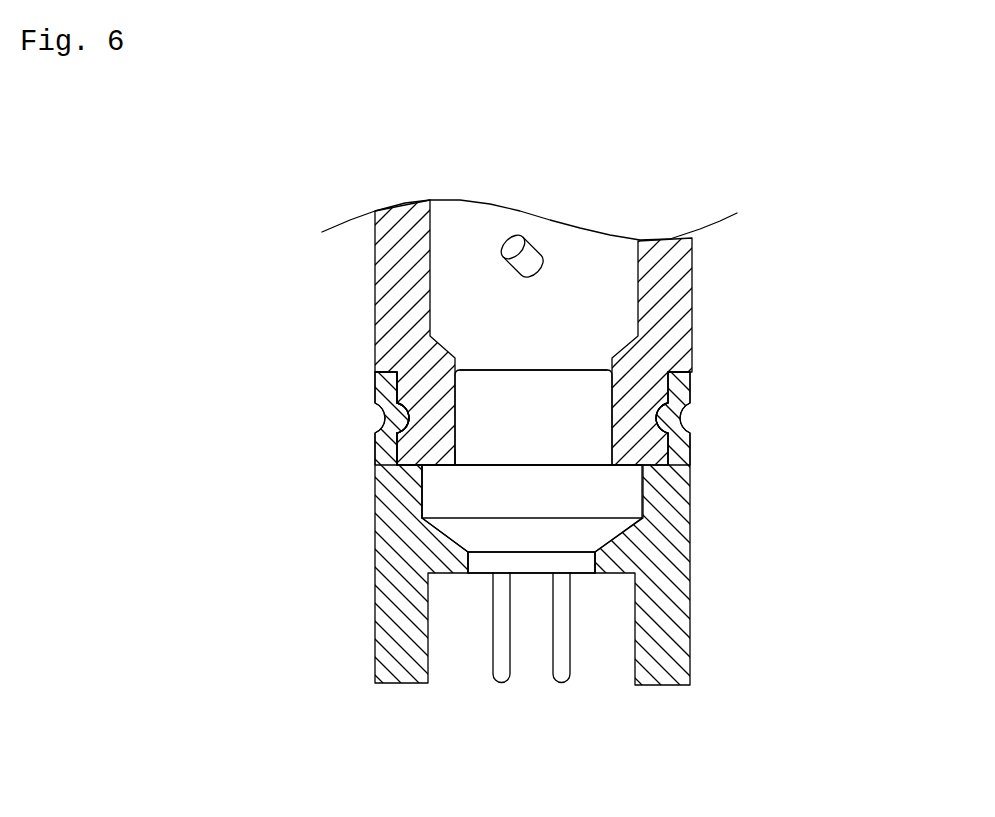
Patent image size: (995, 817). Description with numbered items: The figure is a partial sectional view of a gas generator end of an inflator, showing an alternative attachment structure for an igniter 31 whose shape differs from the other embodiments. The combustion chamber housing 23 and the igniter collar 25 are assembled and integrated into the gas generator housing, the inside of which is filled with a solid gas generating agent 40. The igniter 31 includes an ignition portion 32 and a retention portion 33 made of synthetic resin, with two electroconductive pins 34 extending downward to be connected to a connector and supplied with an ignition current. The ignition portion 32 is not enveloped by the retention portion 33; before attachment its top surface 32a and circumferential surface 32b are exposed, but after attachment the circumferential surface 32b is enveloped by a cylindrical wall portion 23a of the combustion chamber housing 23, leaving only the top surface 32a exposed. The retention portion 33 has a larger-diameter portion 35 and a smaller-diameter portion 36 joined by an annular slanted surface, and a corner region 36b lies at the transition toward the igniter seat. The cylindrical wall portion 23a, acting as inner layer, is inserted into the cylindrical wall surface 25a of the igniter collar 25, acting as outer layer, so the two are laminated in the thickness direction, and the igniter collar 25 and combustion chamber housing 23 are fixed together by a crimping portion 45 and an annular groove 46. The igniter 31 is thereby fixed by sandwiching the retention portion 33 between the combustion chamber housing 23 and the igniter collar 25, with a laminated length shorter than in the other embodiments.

The combustion chamber housing 23 is at (678, 278).
The cylindrical wall portion 23a is at (418, 385).
The igniter collar 25 is at (663, 649).
The cylindrical wall surface 25a is at (385, 393).
The igniter 31 is at (846, 476).
The ignition portion 32 is at (588, 446).
The top surface 32a is at (537, 370).
The circumferential surface 32b is at (405, 410).
The retention portion 33 is at (618, 503).
The electroconductive pins 34 is at (560, 684).
The larger-diameter portion 35 is at (432, 502).
The smaller-diameter portion 36 is at (480, 565).
The corner portion 36b is at (453, 452).
The solid gas generating agent 40 is at (545, 258).
The crimping portion 45 is at (680, 420).
The annular groove 46 is at (672, 420).